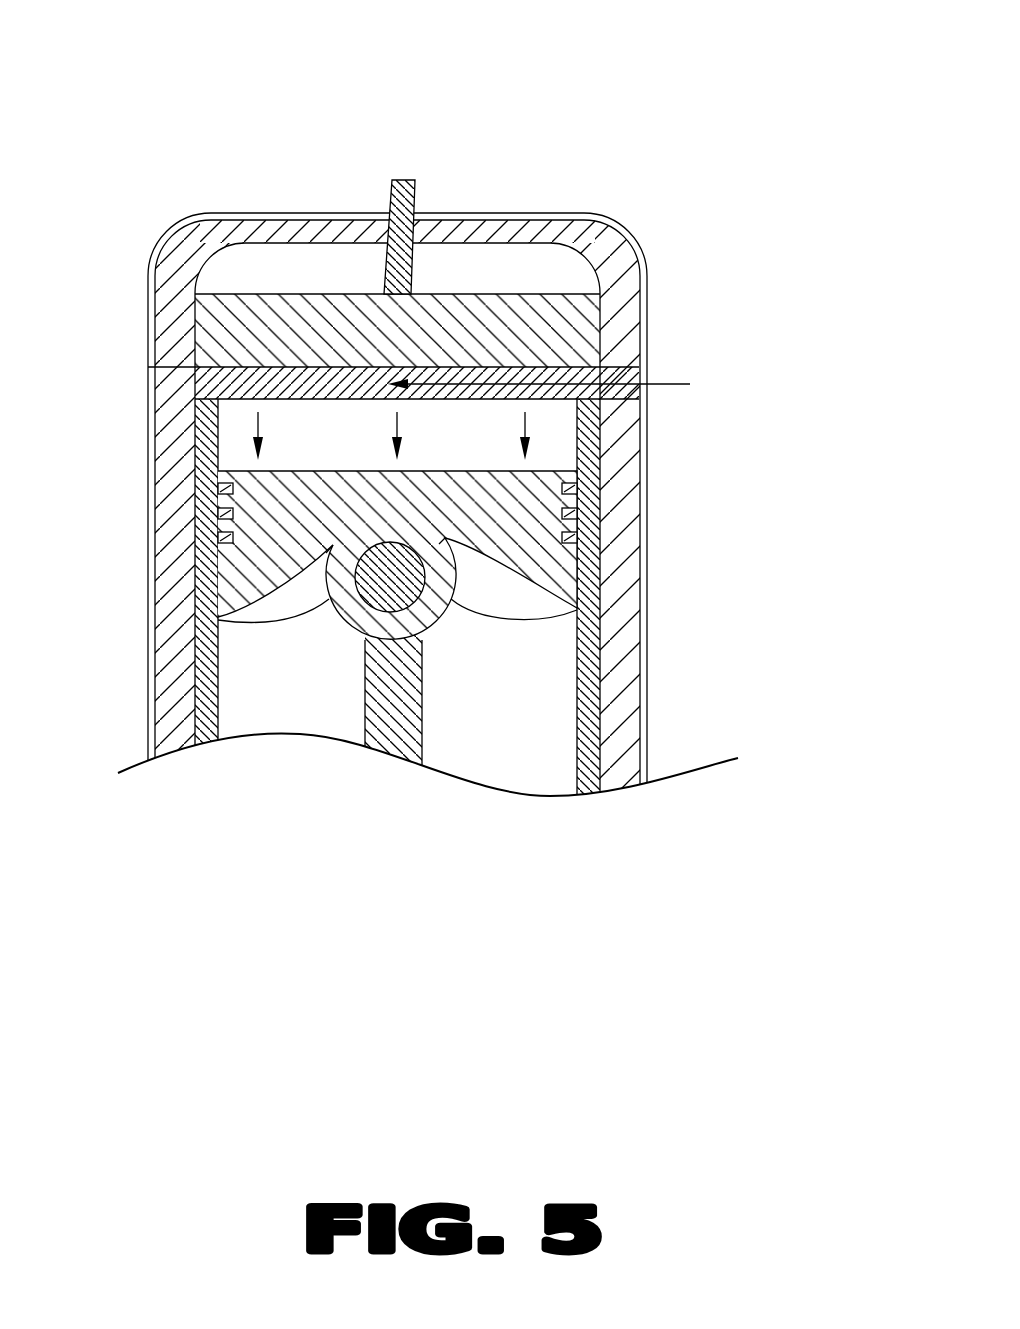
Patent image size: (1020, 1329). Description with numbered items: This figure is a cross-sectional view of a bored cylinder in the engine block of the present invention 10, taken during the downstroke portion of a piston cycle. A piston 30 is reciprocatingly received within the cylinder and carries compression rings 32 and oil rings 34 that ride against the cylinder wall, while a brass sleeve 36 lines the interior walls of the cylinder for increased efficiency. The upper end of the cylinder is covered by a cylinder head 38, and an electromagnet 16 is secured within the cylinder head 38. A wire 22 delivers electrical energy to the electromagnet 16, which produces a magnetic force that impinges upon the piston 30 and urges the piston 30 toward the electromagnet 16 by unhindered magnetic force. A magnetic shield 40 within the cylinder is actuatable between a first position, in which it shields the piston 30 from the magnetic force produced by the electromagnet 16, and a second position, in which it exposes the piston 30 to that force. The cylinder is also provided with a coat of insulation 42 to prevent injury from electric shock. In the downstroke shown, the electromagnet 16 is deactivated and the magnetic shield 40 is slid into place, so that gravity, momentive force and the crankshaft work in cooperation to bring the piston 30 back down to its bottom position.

The present invention 10 is at (774, 122).
The electromagnet 16 is at (272, 307).
The wire 22 is at (455, 185).
The piston 30 is at (540, 505).
The compression rings 32 is at (228, 482).
The oil rings 34 is at (580, 541).
The brass sleeve 36 is at (212, 708).
The cylinder head 38 is at (533, 235).
The magnetic shield 40 is at (618, 372).
The coat of insulation 42 is at (641, 256).